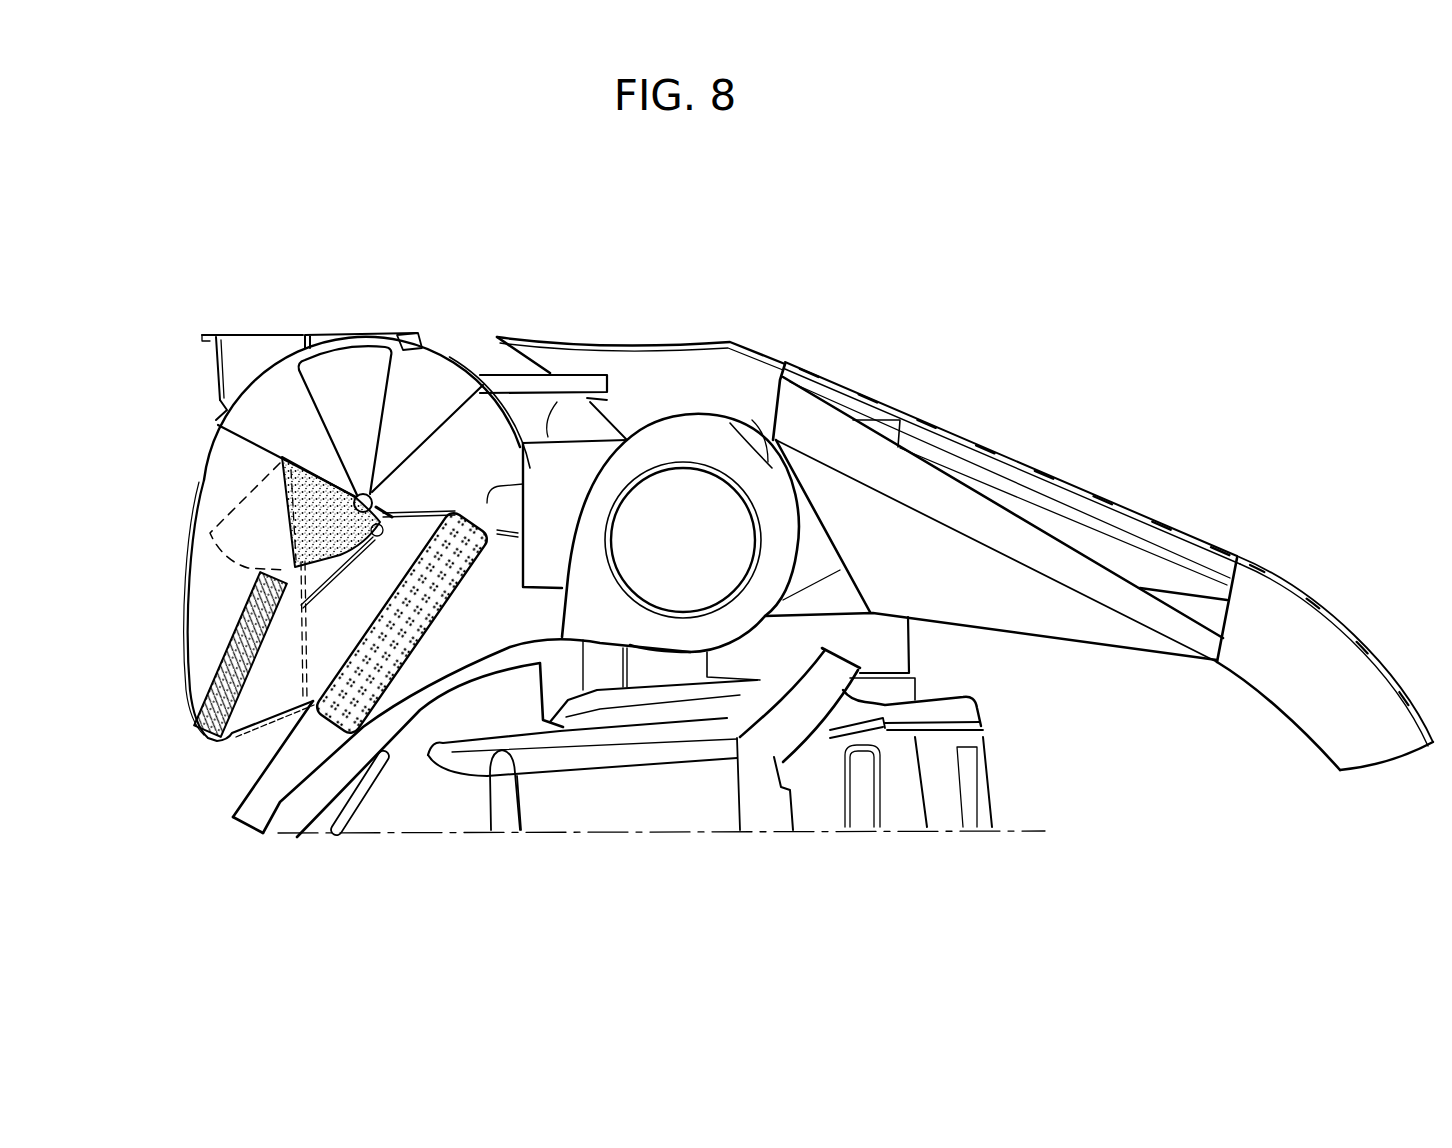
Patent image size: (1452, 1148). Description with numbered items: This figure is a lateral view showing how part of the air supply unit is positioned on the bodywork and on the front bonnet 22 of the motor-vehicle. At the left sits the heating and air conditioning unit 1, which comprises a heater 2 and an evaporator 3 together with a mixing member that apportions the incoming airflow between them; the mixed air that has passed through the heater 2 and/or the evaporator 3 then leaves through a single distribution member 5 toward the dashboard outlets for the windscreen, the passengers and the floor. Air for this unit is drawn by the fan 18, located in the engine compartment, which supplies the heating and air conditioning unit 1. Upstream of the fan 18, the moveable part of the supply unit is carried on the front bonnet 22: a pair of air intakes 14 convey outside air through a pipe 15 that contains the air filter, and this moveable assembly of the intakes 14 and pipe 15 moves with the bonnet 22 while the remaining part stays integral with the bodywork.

The heating and air conditioning unit 1 is at (291, 318).
The heater 2 is at (223, 667).
The evaporator 3 is at (383, 670).
The distribution member 5 is at (401, 326).
The air intakes 14 is at (1043, 623).
The pipe 15 is at (1113, 527).
The fan 18 is at (697, 500).
The front bonnet 22 is at (1330, 612).